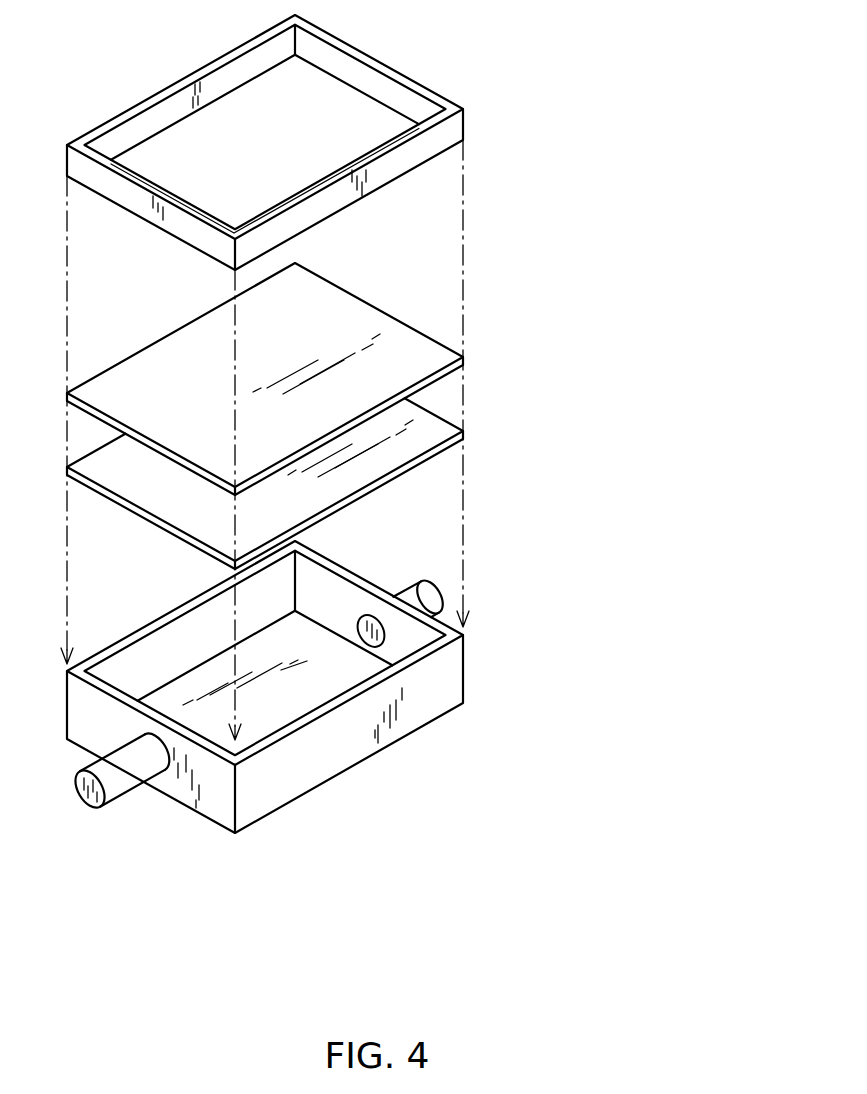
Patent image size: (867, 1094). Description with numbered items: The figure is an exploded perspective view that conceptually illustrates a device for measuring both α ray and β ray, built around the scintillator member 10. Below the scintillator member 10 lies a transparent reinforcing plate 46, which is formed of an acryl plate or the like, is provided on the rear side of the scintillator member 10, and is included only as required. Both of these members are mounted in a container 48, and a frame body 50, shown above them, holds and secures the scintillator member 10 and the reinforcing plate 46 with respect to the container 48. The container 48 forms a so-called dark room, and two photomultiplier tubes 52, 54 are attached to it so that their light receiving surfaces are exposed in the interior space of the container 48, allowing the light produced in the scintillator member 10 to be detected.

The scintillator member 10 is at (398, 322).
The transparent reinforcing plate 46 is at (448, 417).
The container 48 is at (463, 672).
The frame body 50 is at (423, 82).
The photomultiplier tube 52 is at (122, 793).
The photomultiplier tube 54 is at (437, 583).